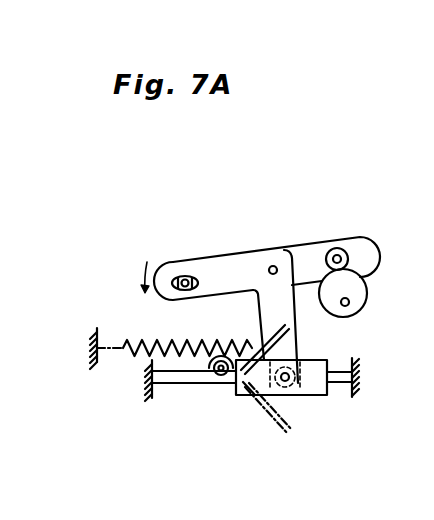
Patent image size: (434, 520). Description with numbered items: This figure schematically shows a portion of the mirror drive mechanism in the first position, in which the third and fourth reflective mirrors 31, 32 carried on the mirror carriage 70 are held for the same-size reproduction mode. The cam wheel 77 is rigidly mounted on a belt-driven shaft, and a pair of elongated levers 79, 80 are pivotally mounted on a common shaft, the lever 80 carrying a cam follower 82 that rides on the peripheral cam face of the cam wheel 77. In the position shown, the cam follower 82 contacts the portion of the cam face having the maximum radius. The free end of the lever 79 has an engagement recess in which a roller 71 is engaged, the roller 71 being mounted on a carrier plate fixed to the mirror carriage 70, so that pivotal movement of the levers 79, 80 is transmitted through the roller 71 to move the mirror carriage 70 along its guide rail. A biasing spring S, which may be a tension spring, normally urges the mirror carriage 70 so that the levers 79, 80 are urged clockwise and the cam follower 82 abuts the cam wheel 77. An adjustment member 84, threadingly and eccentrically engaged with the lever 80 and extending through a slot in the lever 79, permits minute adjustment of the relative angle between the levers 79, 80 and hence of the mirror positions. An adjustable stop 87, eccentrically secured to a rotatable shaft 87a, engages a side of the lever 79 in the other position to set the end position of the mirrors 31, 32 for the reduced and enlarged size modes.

The lever 80 is at (372, 249).
The lever 79 is at (284, 309).
The cam follower 82 is at (337, 248).
The cam wheel 77 is at (350, 293).
The adjustment member 84 is at (187, 276).
The fourth reflective mirror 32 is at (262, 327).
The biasing spring S is at (140, 334).
The adjustable stop 87 is at (213, 386).
The rotatable shaft 87a is at (214, 363).
The mirror carriage 70 is at (322, 385).
The roller 71 is at (288, 387).
The third reflective mirror 31 is at (267, 410).